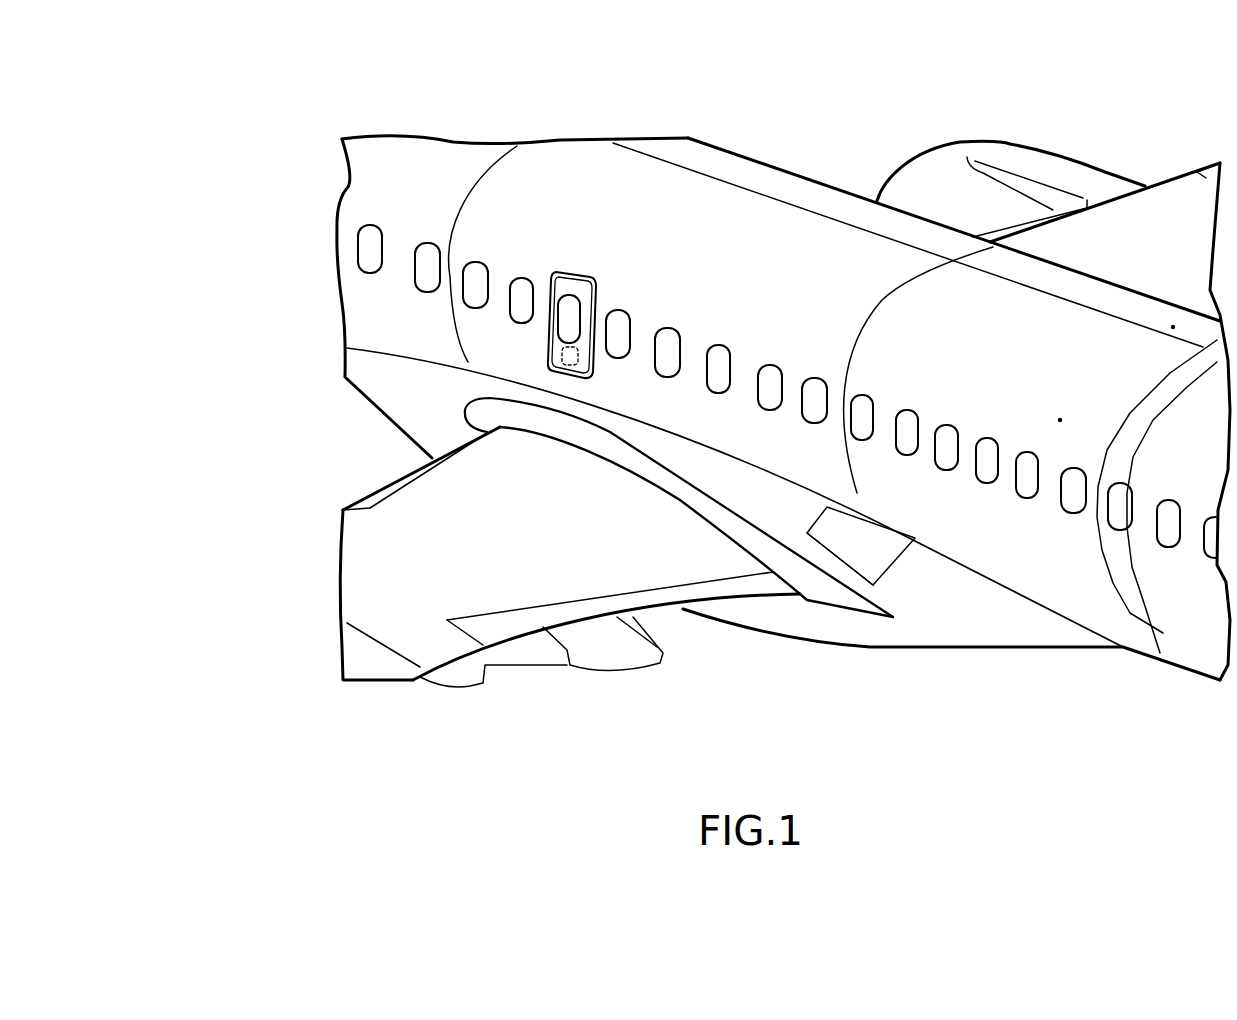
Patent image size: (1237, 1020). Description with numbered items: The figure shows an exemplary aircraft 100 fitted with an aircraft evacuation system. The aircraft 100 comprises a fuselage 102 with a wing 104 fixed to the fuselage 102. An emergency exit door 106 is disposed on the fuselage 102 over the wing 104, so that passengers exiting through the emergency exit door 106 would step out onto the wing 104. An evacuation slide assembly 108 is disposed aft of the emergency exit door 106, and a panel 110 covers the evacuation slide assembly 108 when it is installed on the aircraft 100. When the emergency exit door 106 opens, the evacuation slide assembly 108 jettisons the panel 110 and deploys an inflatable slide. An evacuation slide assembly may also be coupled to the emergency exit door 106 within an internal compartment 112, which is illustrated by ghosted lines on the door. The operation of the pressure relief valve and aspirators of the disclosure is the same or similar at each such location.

The aircraft 100 is at (283, 126).
The fuselage 102 is at (367, 313).
The wing 104 is at (560, 527).
The emergency exit door 106 is at (563, 270).
The evacuation slide assembly 108 is at (895, 563).
The panel 110 is at (877, 563).
The internal compartment 112 is at (578, 360).